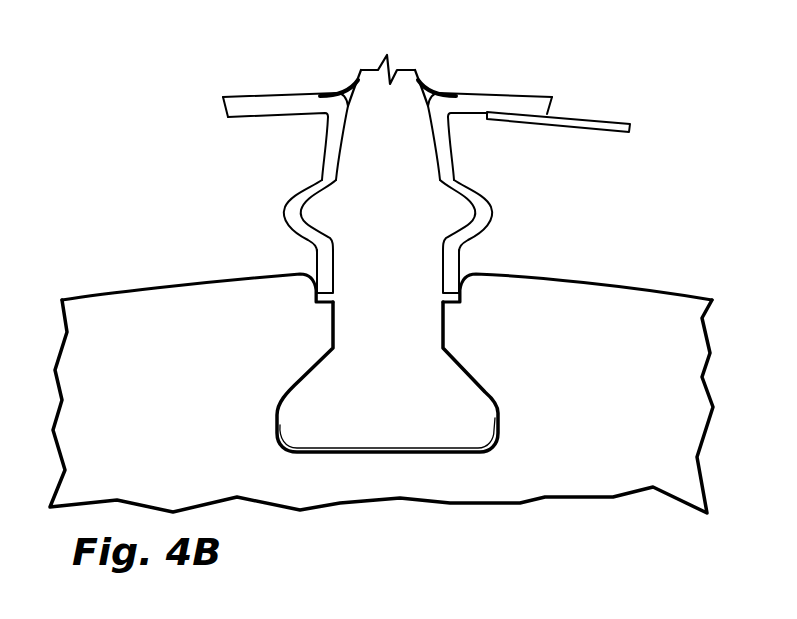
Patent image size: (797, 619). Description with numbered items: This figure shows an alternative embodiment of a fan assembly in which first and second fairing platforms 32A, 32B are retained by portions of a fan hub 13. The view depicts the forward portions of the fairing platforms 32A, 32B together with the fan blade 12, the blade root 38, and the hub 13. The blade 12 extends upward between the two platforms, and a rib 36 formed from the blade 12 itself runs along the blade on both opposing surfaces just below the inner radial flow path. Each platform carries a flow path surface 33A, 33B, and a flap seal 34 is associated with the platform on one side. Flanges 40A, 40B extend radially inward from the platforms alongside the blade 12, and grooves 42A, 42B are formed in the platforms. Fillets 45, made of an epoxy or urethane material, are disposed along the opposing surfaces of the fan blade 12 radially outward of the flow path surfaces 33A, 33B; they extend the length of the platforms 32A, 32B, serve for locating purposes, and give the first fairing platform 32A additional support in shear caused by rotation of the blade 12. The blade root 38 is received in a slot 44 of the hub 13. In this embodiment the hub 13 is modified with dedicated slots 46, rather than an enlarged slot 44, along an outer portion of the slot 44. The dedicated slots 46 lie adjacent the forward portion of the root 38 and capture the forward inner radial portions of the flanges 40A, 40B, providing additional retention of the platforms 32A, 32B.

The fan blade 12 is at (403, 97).
The fan hub 13 is at (637, 300).
The first fairing platform 32A is at (265, 150).
The second fairing platform 32B is at (502, 150).
The first flow path surface 33A is at (255, 107).
The second flow path surface 33B is at (542, 107).
The flap seal 34 is at (598, 123).
The rib 36 is at (320, 210).
The blade root 38 is at (466, 408).
The flange 40A is at (331, 143).
The flange 40B is at (445, 143).
The groove 42A is at (294, 214).
The groove 42B is at (483, 222).
The slot 44 is at (518, 445).
The fillets 45 is at (345, 95).
The dedicated slots 46 is at (314, 304).